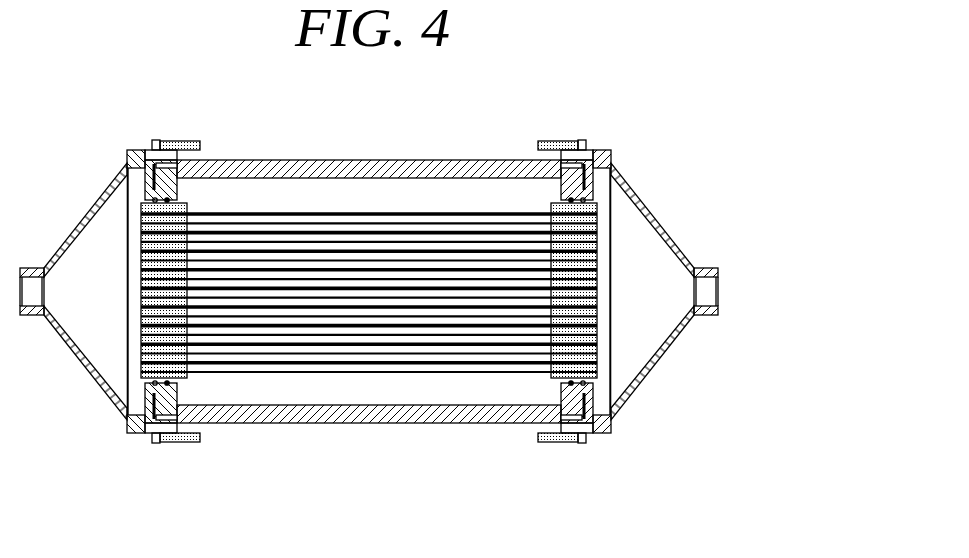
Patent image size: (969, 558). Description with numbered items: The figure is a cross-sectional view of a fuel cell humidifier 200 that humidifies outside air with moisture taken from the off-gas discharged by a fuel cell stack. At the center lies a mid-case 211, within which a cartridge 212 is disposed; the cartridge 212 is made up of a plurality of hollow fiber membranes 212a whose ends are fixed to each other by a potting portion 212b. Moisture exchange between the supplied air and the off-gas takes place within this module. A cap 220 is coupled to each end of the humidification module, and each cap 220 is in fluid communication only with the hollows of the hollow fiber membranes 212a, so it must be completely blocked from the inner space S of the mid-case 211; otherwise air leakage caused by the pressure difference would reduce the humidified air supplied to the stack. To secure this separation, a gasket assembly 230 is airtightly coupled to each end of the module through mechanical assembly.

The fuel cell humidifier 200 is at (370, 108).
The mid-case 211 is at (234, 176).
The cartridge 212 is at (288, 502).
The hollow fiber membranes 212a is at (268, 372).
The potting portion 212b is at (180, 382).
The cap 220 is at (83, 218).
The gasket assembly 230 is at (552, 395).
The inner space S is at (312, 193).